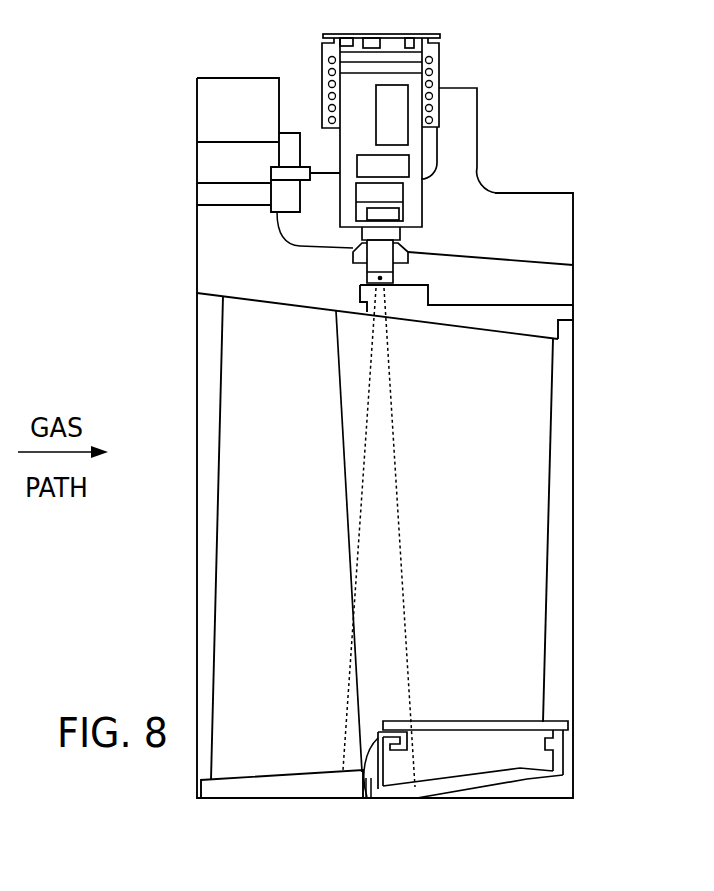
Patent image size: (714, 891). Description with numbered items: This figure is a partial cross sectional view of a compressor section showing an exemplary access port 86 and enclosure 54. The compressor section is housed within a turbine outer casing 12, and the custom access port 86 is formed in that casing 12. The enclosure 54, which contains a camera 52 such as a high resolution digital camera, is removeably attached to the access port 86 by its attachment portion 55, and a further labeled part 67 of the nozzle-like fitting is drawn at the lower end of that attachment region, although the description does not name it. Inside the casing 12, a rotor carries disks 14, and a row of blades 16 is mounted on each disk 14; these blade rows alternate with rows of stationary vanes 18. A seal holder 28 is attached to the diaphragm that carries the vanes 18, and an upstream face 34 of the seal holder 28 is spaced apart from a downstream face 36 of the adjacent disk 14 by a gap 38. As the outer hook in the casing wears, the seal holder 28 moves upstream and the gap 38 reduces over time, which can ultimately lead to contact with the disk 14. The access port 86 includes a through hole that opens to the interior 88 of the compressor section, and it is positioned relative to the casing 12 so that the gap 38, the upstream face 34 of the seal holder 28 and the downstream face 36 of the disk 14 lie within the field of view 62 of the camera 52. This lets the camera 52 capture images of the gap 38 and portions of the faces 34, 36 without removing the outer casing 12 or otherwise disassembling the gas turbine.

The outer casing 12 is at (158, 136).
The disk 14 is at (225, 787).
The blades 16 is at (262, 548).
The vanes 18 is at (490, 553).
The seal holder 28 is at (453, 787).
The upstream face 34 is at (383, 797).
The downstream face 36 is at (367, 797).
The gap 38 is at (374, 797).
The camera 52 is at (421, 151).
The enclosure 54 is at (440, 53).
The attachment portion 55 is at (353, 253).
The field of view 62 is at (408, 645).
The nozzle tip 67 is at (367, 277).
The access port 86 is at (407, 243).
The interior 88 is at (496, 282).